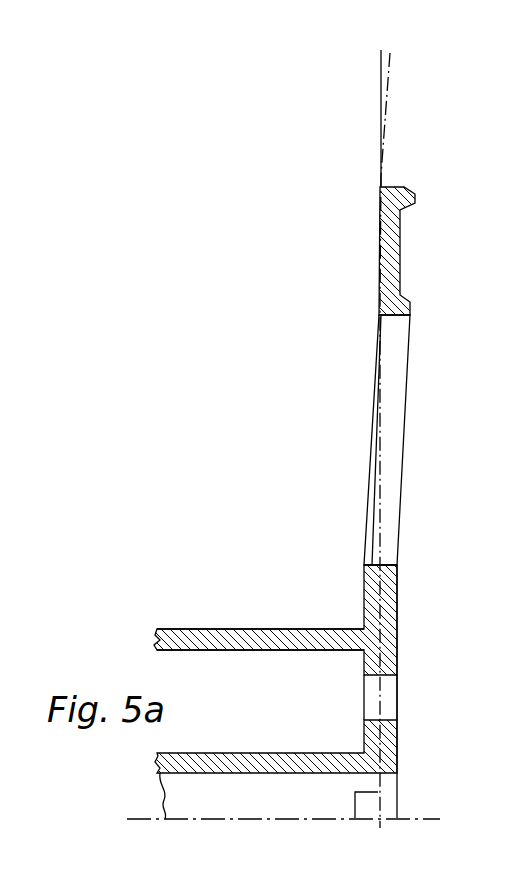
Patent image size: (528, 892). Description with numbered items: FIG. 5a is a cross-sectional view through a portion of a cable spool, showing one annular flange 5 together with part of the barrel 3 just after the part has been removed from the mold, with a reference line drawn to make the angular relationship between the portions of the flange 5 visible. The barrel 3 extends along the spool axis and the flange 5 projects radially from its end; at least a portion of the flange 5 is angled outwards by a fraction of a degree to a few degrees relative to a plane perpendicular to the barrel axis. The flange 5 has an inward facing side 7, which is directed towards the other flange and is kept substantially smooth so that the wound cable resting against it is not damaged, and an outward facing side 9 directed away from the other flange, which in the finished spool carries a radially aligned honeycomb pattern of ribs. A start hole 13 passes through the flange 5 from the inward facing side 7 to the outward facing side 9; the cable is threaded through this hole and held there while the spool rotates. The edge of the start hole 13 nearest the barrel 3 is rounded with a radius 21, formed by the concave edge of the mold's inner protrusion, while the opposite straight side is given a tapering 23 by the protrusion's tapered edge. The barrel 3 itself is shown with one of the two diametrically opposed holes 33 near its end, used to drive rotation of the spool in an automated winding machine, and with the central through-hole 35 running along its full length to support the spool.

The barrel 3 is at (178, 629).
The annular flange 5 is at (283, 404).
The inward facing side 7 is at (363, 590).
The outward facing side 9 is at (397, 612).
The start hole 13 is at (402, 422).
The radius 21 is at (366, 565).
The tapering 23 is at (377, 281).
The diametrically opposed holes 33 is at (385, 703).
The central through-hole 35 is at (388, 803).